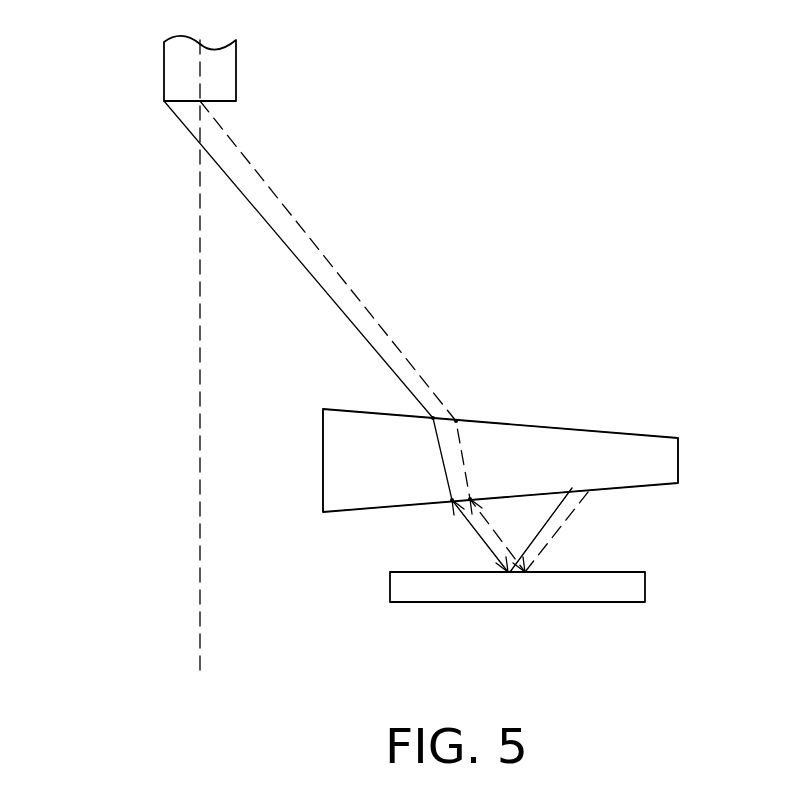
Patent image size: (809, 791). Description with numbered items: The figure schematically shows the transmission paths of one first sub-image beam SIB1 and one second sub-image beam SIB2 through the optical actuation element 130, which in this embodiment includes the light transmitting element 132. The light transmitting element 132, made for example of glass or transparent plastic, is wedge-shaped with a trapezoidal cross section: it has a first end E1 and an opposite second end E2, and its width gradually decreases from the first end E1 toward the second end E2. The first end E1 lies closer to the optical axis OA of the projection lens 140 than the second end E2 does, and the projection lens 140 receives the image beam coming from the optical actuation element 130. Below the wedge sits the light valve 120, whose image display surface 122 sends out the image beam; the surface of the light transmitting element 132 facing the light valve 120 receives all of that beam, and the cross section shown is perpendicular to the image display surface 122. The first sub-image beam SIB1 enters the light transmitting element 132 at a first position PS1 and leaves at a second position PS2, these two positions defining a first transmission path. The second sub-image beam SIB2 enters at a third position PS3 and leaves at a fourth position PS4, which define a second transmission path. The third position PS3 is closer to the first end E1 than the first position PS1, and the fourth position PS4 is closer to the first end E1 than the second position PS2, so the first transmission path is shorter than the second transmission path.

The projection lens 140 is at (164, 70).
The optical axis OA is at (200, 266).
The optical actuation element 130 is at (332, 463).
The light transmitting element 132 is at (450, 463).
The first end E1 is at (343, 417).
The second end E2 is at (643, 443).
The first position PS1 is at (470, 499).
The second position PS2 is at (456, 421).
The third position PS3 is at (452, 502).
The fourth position PS4 is at (433, 418).
The first sub-image beam SIB1 is at (534, 530).
The second sub-image beam SIB2 is at (480, 536).
The light valve 120 is at (398, 588).
The image display surface 122 is at (630, 572).